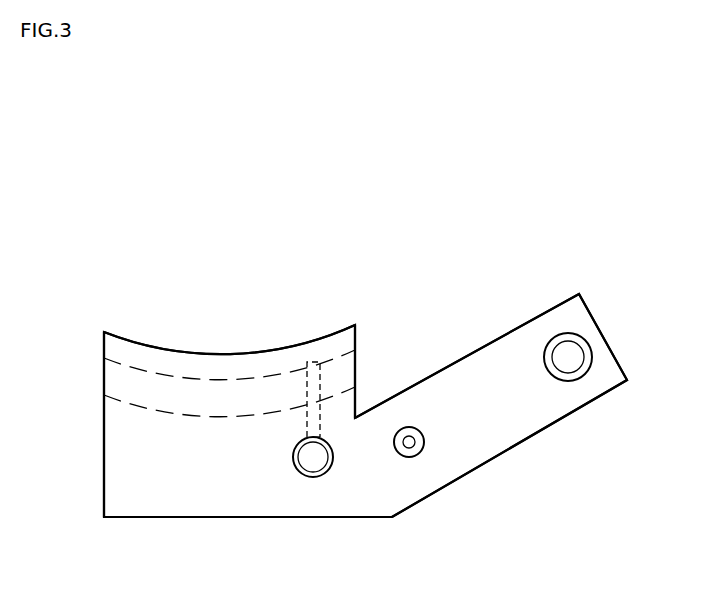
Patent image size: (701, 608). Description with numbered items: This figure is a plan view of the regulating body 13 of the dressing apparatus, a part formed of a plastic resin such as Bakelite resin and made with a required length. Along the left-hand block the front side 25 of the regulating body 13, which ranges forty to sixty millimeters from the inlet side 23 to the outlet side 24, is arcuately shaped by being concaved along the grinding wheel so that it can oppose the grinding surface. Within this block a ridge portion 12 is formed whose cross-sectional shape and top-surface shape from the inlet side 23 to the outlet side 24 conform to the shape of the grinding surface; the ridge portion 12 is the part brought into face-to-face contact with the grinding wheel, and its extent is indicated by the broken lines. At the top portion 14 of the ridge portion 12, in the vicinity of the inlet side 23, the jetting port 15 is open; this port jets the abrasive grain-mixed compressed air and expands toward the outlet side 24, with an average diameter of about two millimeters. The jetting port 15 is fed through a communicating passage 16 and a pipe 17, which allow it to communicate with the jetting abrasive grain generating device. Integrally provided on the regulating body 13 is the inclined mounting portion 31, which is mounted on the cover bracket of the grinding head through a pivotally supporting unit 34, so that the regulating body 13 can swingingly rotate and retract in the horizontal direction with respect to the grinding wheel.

The ridge portion 12 is at (227, 377).
The regulating body 13 is at (218, 496).
The top portion 14 is at (264, 373).
The jetting port 15 is at (312, 368).
The communicating passage 16 is at (314, 423).
The pipe 17 is at (313, 478).
The inlet side 23 is at (353, 325).
The outlet side 24 is at (104, 336).
The front side 25 is at (171, 348).
The mounting portion 31 is at (494, 442).
The pivotally supporting unit 34 is at (572, 351).